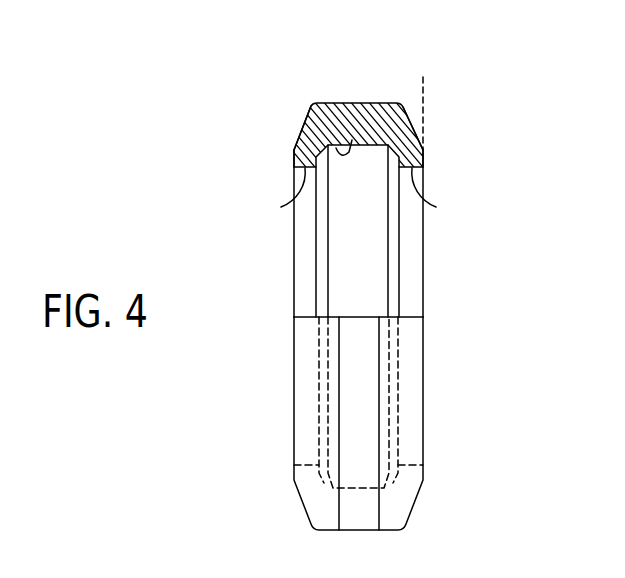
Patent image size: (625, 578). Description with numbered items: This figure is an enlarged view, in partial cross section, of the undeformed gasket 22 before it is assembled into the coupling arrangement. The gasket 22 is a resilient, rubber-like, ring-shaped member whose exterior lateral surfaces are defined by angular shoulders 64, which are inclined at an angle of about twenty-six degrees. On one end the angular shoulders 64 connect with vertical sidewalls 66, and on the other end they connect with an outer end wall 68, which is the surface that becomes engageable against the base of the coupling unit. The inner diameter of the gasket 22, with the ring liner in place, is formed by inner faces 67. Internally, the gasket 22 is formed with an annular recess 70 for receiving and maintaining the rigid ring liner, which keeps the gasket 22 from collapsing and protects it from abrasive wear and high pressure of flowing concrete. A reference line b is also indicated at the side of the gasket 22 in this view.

The deformable gasket 22 is at (449, 270).
The angular shoulders 64 is at (302, 130).
The vertical sidewalls 66 is at (294, 157).
The inner faces 67 is at (283, 206).
The outer end wall 68 is at (354, 102).
The annular recess 70 is at (336, 148).
The reference line b is at (422, 111).